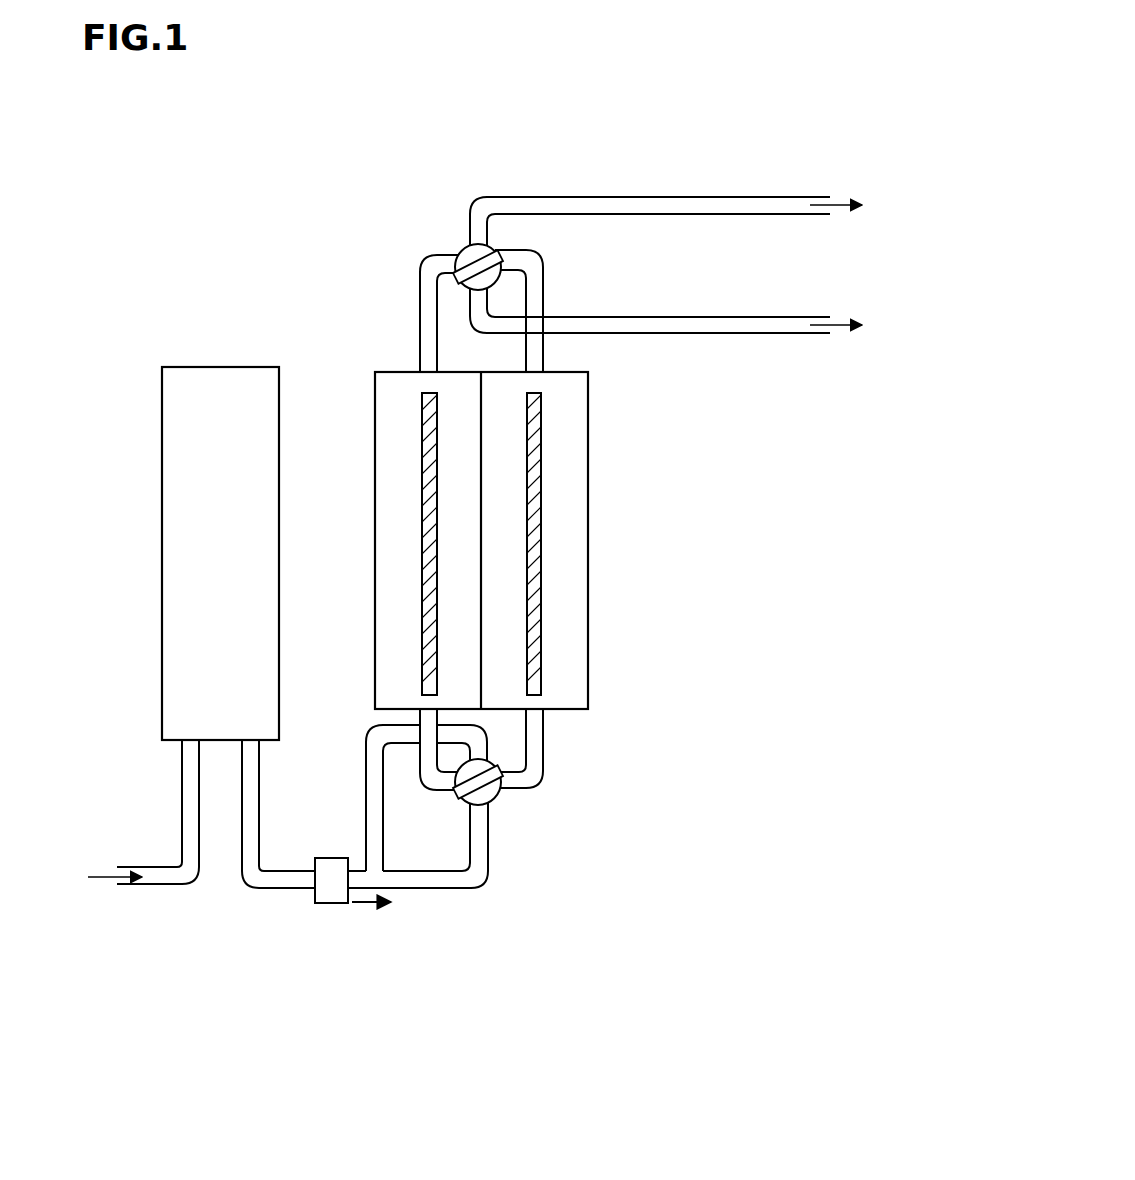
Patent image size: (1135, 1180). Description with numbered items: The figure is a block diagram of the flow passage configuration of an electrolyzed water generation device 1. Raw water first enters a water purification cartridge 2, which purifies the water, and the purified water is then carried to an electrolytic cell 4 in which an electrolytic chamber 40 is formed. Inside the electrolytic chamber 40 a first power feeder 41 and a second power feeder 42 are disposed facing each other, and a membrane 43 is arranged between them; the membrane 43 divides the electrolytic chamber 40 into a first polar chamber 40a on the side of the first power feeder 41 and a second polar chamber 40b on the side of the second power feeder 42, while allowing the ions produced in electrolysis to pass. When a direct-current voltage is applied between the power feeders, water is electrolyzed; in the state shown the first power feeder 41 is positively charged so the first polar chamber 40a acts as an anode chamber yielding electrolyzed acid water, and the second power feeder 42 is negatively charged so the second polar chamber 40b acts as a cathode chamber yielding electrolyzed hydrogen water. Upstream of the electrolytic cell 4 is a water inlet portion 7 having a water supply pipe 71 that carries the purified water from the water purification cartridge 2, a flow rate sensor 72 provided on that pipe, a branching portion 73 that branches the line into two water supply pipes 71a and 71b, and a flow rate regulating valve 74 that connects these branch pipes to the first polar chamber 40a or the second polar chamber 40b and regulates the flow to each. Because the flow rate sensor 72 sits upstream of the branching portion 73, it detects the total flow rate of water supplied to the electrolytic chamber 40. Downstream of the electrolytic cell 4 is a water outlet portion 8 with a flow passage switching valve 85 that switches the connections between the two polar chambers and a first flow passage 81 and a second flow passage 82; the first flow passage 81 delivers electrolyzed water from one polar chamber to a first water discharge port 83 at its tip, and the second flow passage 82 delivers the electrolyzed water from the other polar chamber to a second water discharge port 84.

The electrolyzed water generation device 1 is at (798, 86).
The water purification cartridge 2 is at (217, 366).
The electrolytic cell 4 is at (506, 539).
The electrolytic chamber 40 is at (506, 539).
The first polar chamber 40a is at (610, 544).
The second polar chamber 40b is at (368, 544).
The first power feeder 41 is at (533, 577).
The second power feeder 42 is at (428, 615).
The membrane 43 is at (480, 385).
The water inlet portion 7 is at (401, 876).
The water supply pipe 71 is at (250, 848).
The water supply pipe 71a is at (457, 882).
The water supply pipe 71b is at (372, 783).
The flow rate sensor 72 is at (316, 900).
The branching portion 73 is at (377, 880).
The flow rate regulating valve 74 is at (484, 785).
The water outlet portion 8 is at (715, 262).
The first flow passage 81 is at (657, 197).
The second flow passage 82 is at (657, 317).
The first water discharge port 83 is at (830, 214).
The second water discharge port 84 is at (830, 317).
The flow passage switching valve 85 is at (473, 261).